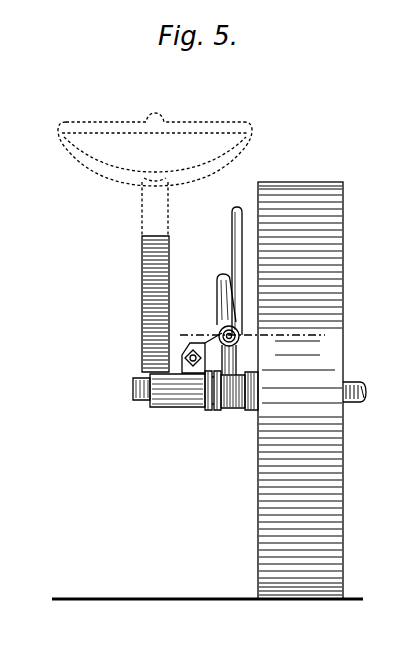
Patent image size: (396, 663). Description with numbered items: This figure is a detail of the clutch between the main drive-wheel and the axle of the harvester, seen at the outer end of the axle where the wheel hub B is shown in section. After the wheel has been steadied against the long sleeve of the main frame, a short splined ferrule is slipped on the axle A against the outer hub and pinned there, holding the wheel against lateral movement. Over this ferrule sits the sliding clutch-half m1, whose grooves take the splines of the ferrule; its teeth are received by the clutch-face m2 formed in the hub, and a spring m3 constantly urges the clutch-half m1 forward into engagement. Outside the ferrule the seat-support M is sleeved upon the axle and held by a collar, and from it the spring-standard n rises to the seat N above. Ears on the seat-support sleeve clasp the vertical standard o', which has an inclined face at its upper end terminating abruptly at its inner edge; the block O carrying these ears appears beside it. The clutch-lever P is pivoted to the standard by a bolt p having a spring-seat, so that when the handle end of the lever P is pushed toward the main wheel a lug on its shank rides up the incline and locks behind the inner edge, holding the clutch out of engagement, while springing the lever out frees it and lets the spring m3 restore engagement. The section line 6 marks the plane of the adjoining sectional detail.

The seat N is at (155, 174).
The spring-standard n is at (144, 304).
The clutch-lever P is at (231, 235).
The vertical standard o' is at (224, 293).
The pivot block O is at (190, 345).
The bolt p is at (235, 350).
The section line 6- 6 is at (187, 322).
The seat-support M is at (179, 399).
The sliding clutch-half m1 is at (232, 400).
The clutch-face m2 is at (252, 408).
The spring m3 is at (214, 401).
The rack B is at (310, 390).
The shaft end A is at (355, 378).